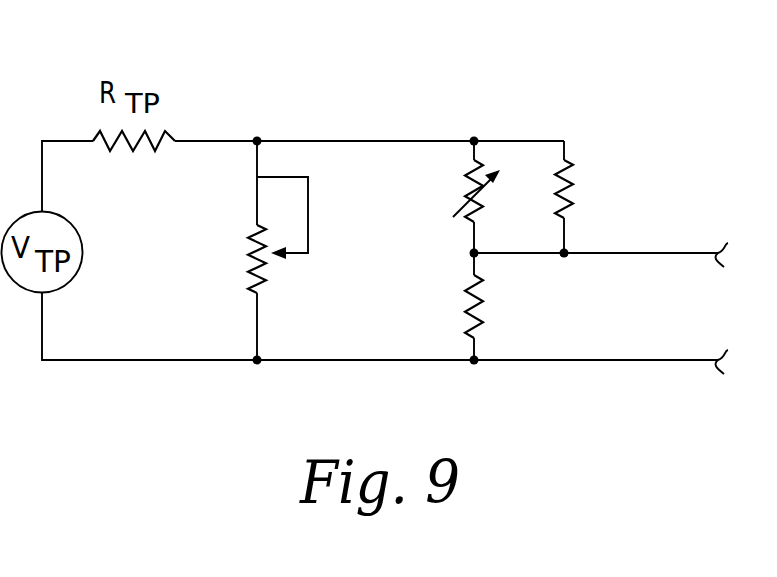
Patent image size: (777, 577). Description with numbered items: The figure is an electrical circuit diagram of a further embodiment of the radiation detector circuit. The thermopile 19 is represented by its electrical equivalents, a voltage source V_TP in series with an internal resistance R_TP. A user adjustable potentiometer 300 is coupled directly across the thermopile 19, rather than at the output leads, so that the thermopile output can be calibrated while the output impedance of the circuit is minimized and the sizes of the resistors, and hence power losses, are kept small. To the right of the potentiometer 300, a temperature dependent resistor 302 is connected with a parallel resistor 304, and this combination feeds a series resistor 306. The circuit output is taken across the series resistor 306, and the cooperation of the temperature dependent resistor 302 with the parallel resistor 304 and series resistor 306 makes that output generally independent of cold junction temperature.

The thermopile 19 is at (252, 104).
The user adjustable potentiometer 300 is at (245, 250).
The temperature dependent resistor 302 is at (460, 192).
The parallel resistor 304 is at (580, 182).
The series resistor 306 is at (460, 313).